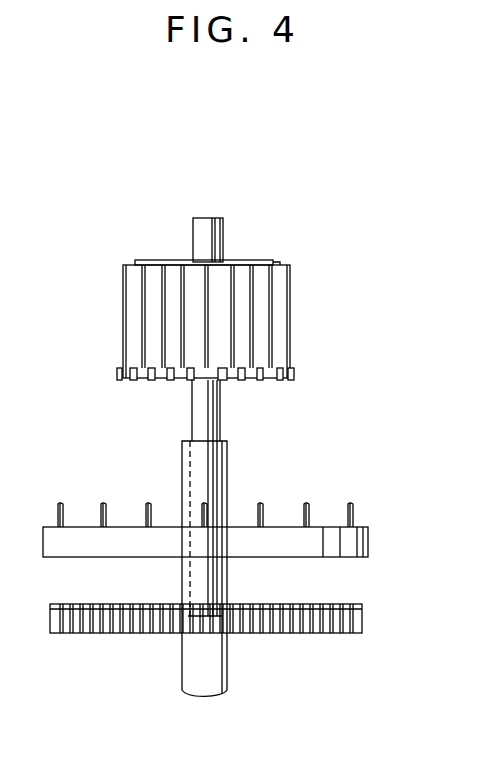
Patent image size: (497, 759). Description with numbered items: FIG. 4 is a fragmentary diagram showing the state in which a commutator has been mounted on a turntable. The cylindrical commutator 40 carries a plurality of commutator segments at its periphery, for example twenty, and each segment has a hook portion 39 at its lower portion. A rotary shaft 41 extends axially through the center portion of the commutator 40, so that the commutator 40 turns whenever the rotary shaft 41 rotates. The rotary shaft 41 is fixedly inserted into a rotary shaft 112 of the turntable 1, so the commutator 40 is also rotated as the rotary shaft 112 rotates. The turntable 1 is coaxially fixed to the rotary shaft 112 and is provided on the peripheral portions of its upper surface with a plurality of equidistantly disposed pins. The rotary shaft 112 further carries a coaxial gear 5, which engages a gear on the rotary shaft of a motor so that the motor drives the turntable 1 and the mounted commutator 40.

The rotary shaft 41 is at (223, 226).
The cylindrical commutator 40 is at (293, 312).
The hook portion 39 is at (115, 378).
The rotary shaft of the turntable 112 is at (227, 477).
The turntable 1 is at (368, 542).
The gear 5 is at (363, 617).